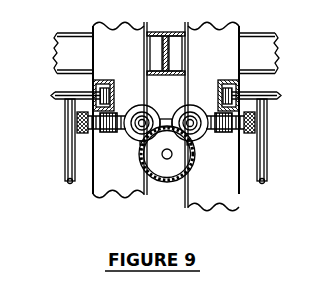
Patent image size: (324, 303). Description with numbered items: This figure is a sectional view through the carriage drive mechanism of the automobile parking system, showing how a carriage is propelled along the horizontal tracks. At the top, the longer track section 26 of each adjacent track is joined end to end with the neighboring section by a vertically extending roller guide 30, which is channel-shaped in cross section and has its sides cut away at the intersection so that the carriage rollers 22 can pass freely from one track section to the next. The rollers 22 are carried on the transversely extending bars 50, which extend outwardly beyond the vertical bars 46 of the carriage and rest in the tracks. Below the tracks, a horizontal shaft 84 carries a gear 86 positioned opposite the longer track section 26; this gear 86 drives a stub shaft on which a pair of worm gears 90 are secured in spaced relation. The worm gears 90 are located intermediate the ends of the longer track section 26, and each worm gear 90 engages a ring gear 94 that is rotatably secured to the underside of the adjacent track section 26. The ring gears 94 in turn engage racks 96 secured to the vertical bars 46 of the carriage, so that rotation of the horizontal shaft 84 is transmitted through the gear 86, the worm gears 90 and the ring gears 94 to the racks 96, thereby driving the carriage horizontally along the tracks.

The roller guide 30 is at (107, 37).
The long track section 26 is at (100, 91).
The roller 22 is at (117, 92).
The transversely extending bar 50 is at (55, 97).
The vertical bar 46 is at (70, 160).
The rack 96 is at (78, 126).
The ring gear 94 is at (108, 133).
The worm gear 90 is at (186, 119).
The horizontal shaft 84 is at (160, 157).
The gear 86 is at (178, 158).